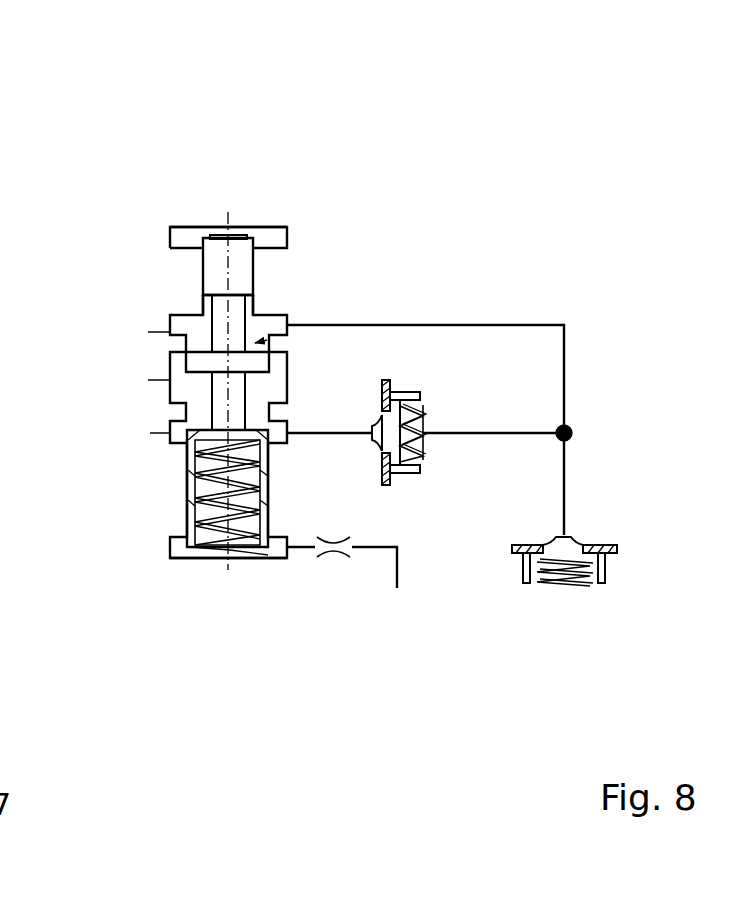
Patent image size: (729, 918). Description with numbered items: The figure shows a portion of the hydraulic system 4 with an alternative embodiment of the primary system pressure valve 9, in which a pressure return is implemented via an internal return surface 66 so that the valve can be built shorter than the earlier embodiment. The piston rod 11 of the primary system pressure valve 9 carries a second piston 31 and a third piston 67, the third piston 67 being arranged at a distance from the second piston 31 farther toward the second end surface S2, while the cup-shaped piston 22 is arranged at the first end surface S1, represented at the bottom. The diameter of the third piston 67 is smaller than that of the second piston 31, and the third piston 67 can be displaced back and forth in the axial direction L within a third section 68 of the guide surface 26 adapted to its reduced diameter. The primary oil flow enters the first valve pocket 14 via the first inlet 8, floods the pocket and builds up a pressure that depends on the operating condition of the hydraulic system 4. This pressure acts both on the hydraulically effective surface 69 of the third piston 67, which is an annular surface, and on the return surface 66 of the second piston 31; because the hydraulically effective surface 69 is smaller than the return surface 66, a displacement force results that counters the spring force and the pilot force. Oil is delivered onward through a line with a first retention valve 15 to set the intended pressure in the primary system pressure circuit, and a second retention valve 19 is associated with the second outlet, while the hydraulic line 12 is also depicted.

The hydraulic system 4 is at (452, 200).
The first inlet 8 is at (168, 325).
The primary system pressure valve 9 is at (290, 185).
The piston rod 11 is at (218, 305).
The hydraulic line 12 is at (268, 497).
The first valve pocket 14 is at (278, 322).
The first retention valve 15 is at (587, 535).
The second retention valve 19 is at (453, 413).
The cup-shaped piston 22 is at (190, 486).
The guide surface 26 is at (238, 346).
The second piston 31 is at (200, 357).
The return surface 66 is at (203, 354).
The third piston 67 is at (240, 272).
The third section 68 is at (205, 297).
The hydraulically effective surface 69 is at (253, 298).
The axial direction L is at (228, 216).
The first end surface S1 is at (258, 568).
The second end surface S2 is at (188, 213).